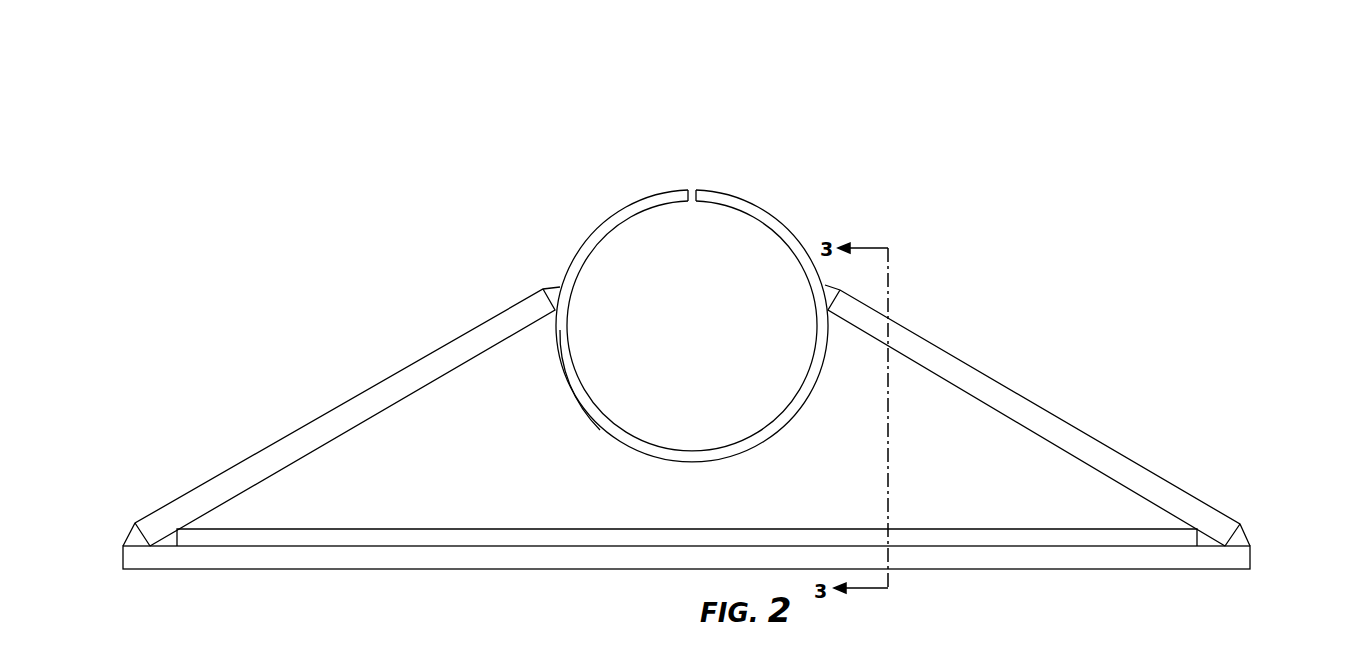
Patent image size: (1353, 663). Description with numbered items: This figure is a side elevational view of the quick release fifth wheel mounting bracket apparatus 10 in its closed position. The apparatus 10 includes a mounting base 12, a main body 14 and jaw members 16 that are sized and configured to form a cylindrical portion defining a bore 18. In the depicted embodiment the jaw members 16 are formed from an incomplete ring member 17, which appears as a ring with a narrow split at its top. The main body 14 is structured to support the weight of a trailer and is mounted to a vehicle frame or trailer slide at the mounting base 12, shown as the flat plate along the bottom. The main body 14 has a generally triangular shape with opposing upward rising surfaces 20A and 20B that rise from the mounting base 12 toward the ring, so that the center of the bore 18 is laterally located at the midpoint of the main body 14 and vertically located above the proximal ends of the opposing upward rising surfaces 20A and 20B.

The quick release fifth wheel mounting bracket apparatus 10 is at (1057, 204).
The mounting base 12 is at (1203, 562).
The main body 14 is at (1122, 454).
The jaw members 16 is at (612, 217).
The incomplete ring member 17 is at (563, 372).
The bore 18 is at (698, 334).
The upward rising surface 20A is at (980, 368).
The upward rising surface 20B is at (397, 370).